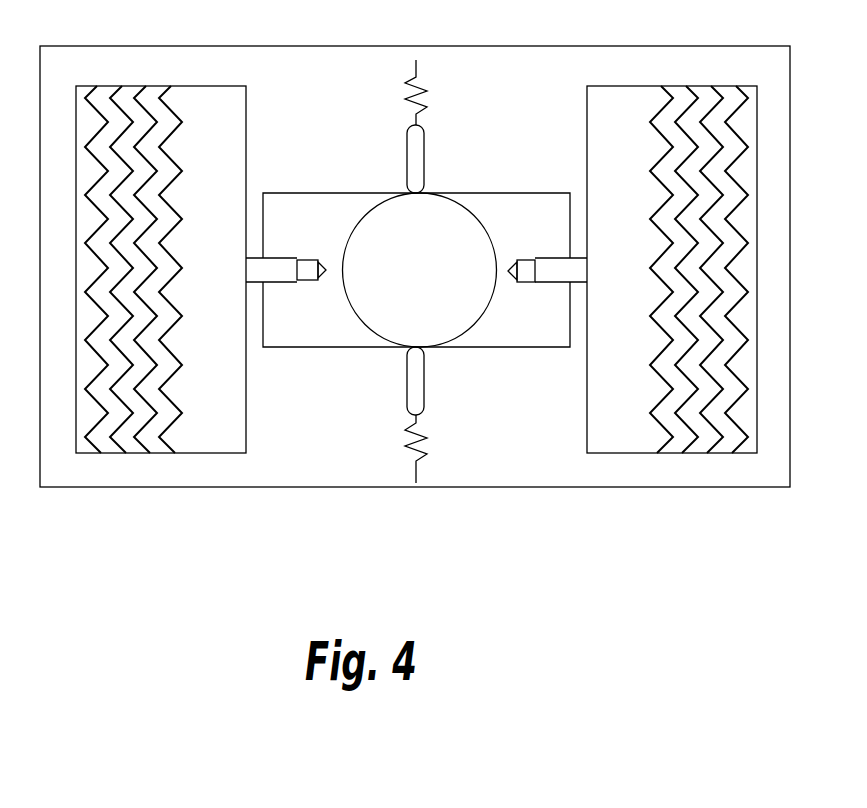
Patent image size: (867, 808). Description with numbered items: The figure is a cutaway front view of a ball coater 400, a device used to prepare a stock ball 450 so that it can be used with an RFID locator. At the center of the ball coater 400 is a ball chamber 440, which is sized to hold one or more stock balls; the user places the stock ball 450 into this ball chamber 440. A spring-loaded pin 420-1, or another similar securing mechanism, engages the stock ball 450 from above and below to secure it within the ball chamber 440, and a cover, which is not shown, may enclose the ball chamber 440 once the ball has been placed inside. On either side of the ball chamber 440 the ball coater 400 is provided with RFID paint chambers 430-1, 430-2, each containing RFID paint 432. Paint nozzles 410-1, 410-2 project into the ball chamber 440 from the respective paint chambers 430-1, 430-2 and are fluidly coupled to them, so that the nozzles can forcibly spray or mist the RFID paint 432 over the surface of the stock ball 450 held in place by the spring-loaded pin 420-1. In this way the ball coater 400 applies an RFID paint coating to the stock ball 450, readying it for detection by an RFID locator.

The ball coater 400 is at (205, 498).
The paint nozzle 410-1 is at (531, 258).
The paint nozzle 410-2 is at (303, 282).
The spring-loaded pin 420-1 is at (418, 88).
The RFID paint chamber 430-1 is at (201, 86).
The RFID paint chamber 430-2 is at (619, 86).
The RFID paint 432 is at (150, 284).
The ball chamber 440 is at (312, 193).
The stock ball 450 is at (440, 286).